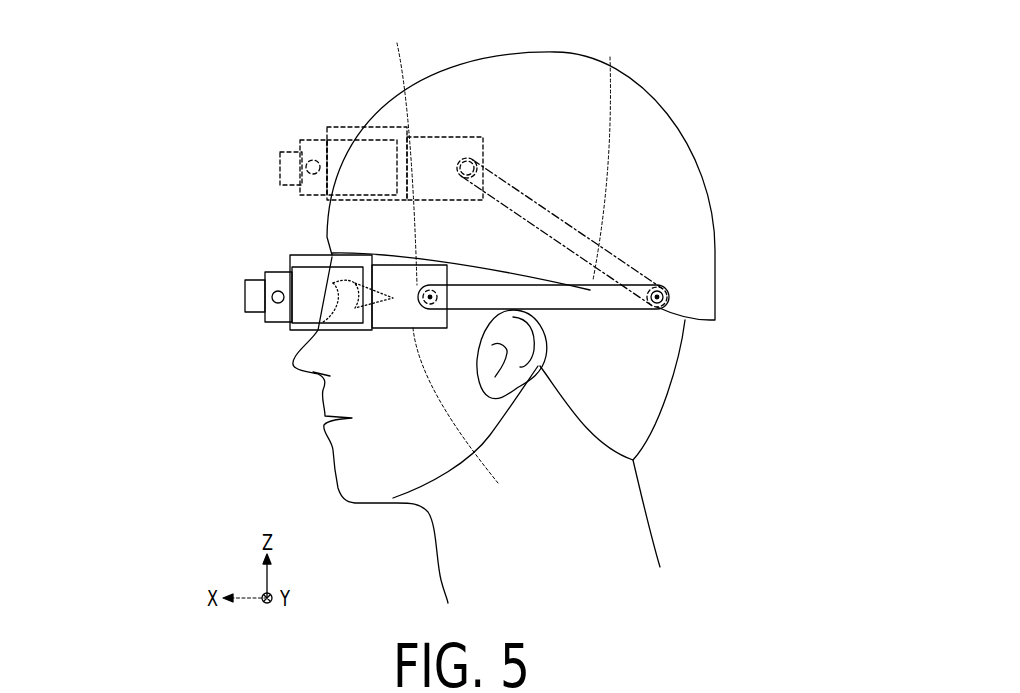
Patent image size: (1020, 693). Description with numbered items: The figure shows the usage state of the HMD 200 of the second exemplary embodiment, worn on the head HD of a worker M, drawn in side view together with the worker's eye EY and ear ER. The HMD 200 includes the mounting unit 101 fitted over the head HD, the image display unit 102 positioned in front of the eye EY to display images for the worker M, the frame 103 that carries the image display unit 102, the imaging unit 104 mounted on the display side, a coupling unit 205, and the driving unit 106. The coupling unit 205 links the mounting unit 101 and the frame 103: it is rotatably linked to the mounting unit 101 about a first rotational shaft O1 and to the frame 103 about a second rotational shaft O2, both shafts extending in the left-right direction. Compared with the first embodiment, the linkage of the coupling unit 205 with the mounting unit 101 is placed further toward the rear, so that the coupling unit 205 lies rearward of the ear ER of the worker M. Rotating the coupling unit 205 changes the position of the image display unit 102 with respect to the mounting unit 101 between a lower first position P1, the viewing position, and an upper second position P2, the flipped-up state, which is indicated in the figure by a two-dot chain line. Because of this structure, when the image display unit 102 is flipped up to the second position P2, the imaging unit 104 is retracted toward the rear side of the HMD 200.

The HMD 200 is at (679, 93).
The mounting unit 101 is at (670, 155).
The image display unit 102 is at (310, 313).
The frame 103 is at (465, 422).
The imaging unit 104 is at (242, 305).
The driving unit 106 is at (277, 303).
The coupling unit 205 is at (616, 153).
The first position P1 is at (236, 293).
The second position P2 is at (288, 140).
The first rotational shaft O1 is at (667, 285).
The second rotational shaft O2 is at (398, 151).
The eyes EY is at (333, 283).
The ear ER is at (533, 397).
The head HD is at (662, 347).
The worker M is at (650, 497).